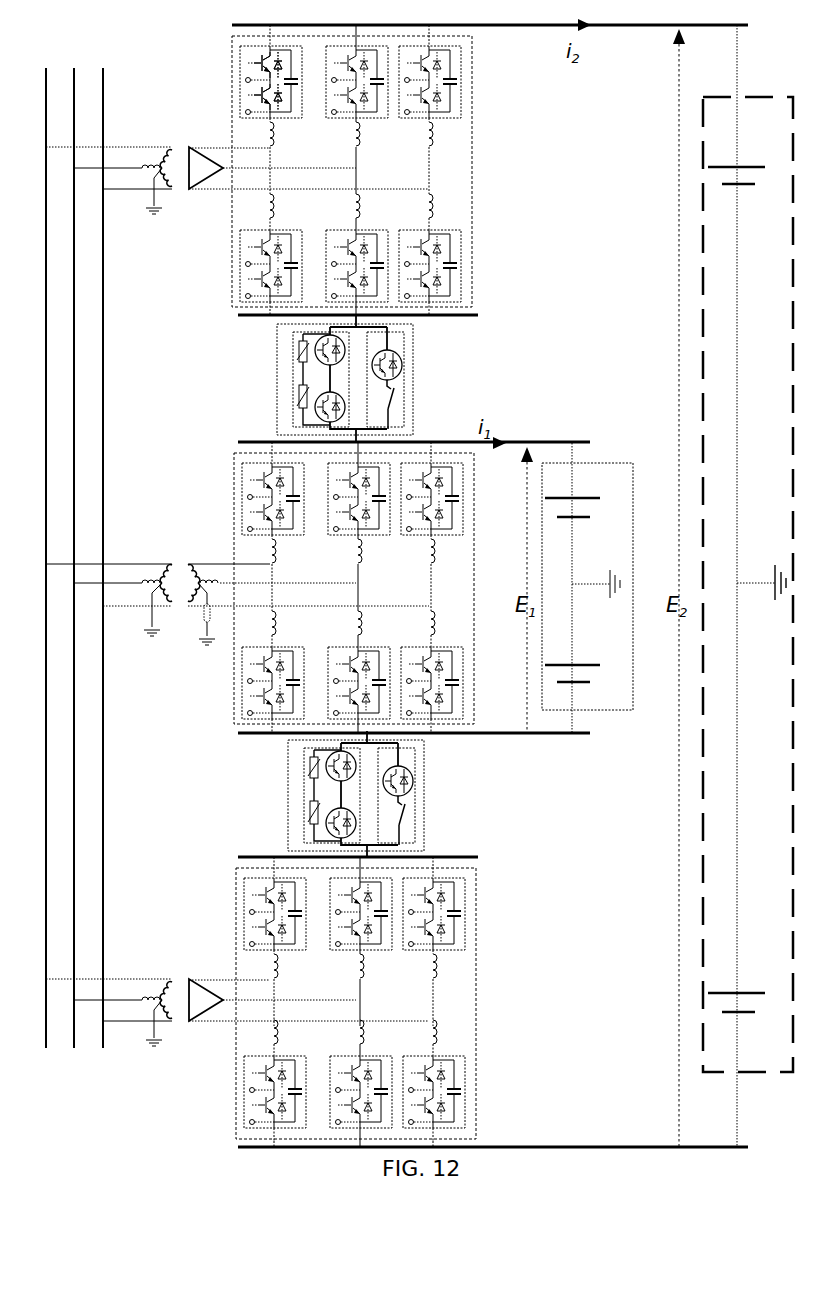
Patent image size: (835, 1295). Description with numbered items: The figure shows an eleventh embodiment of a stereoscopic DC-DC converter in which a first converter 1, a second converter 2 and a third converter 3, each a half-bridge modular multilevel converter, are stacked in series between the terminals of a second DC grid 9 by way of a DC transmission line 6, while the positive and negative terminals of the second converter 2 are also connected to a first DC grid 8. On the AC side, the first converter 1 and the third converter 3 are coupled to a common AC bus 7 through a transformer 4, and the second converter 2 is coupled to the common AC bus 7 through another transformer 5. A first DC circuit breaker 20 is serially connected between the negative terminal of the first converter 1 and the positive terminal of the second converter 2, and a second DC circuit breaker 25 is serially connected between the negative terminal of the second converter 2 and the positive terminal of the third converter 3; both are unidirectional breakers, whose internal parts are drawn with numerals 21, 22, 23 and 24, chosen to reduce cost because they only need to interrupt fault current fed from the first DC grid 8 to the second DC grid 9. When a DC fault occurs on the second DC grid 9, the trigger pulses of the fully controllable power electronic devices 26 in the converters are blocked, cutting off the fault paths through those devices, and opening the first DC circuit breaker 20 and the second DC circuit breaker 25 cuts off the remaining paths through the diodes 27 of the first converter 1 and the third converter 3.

The first converter 1 is at (340, 170).
The second converter 2 is at (476, 578).
The third converter 3 is at (476, 996).
The transformer 4 is at (172, 153).
The transformer 5 is at (178, 570).
The DC transmission line 6 is at (172, 992).
The common AC bus 7 is at (80, 80).
The first DC grid 8 is at (588, 463).
The second DC grid 9 is at (703, 370).
The first DC circuit breaker 20 is at (346, 378).
The resistor branch 21 is at (293, 388).
The switching branch 22 is at (405, 338).
The IGBT switching element 23 is at (402, 356).
The mechanical switch 24 is at (394, 396).
The second DC circuit breaker 25 is at (288, 766).
The fully controllable power electronic devices 26 is at (252, 72).
The diodes 27 is at (283, 108).